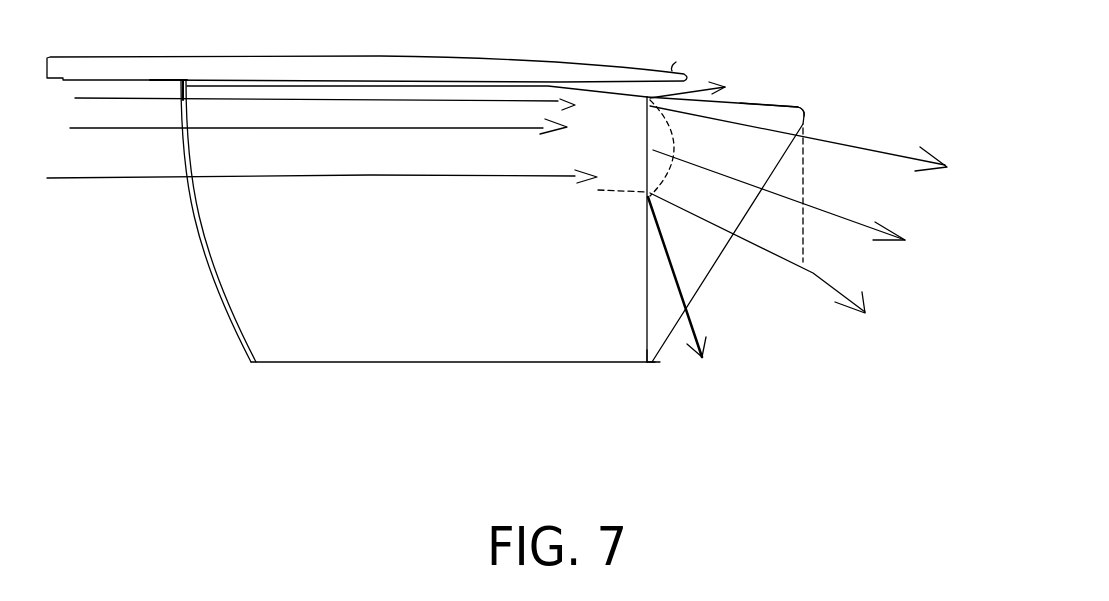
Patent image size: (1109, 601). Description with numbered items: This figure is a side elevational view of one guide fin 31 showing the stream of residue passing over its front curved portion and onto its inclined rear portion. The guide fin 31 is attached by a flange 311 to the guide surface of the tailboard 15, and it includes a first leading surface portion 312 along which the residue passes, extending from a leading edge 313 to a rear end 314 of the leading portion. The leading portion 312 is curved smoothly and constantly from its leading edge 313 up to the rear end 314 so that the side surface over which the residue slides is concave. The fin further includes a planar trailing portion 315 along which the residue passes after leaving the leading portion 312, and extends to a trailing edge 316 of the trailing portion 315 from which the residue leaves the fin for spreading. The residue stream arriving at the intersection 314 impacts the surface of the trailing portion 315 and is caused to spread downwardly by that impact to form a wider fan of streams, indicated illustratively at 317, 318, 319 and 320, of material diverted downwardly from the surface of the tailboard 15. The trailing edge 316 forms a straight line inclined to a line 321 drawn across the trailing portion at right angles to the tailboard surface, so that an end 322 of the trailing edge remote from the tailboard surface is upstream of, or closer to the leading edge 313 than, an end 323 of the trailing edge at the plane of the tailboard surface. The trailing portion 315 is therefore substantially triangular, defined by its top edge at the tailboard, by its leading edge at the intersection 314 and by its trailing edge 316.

The tailboard 15 is at (467, 67).
The guide fin 31 is at (429, 266).
The flange 311 is at (162, 80).
The first leading surface portion 312 is at (377, 323).
The leading edge 313 is at (207, 283).
The rear end of the leading portion 314 is at (643, 307).
The trailing portion 315 is at (805, 200).
The trailing edge 316 is at (717, 267).
The residue stream 317 is at (891, 150).
The residue stream 318 is at (845, 213).
The residue stream 319 is at (798, 268).
The residue stream 320 is at (693, 327).
The line at right angles to the tailboard surface 321 is at (805, 237).
The end of the trailing edge remote from the tailboard surface 322 is at (652, 363).
The end of the trailing edge at the plane of the tailboard surface 323 is at (810, 115).